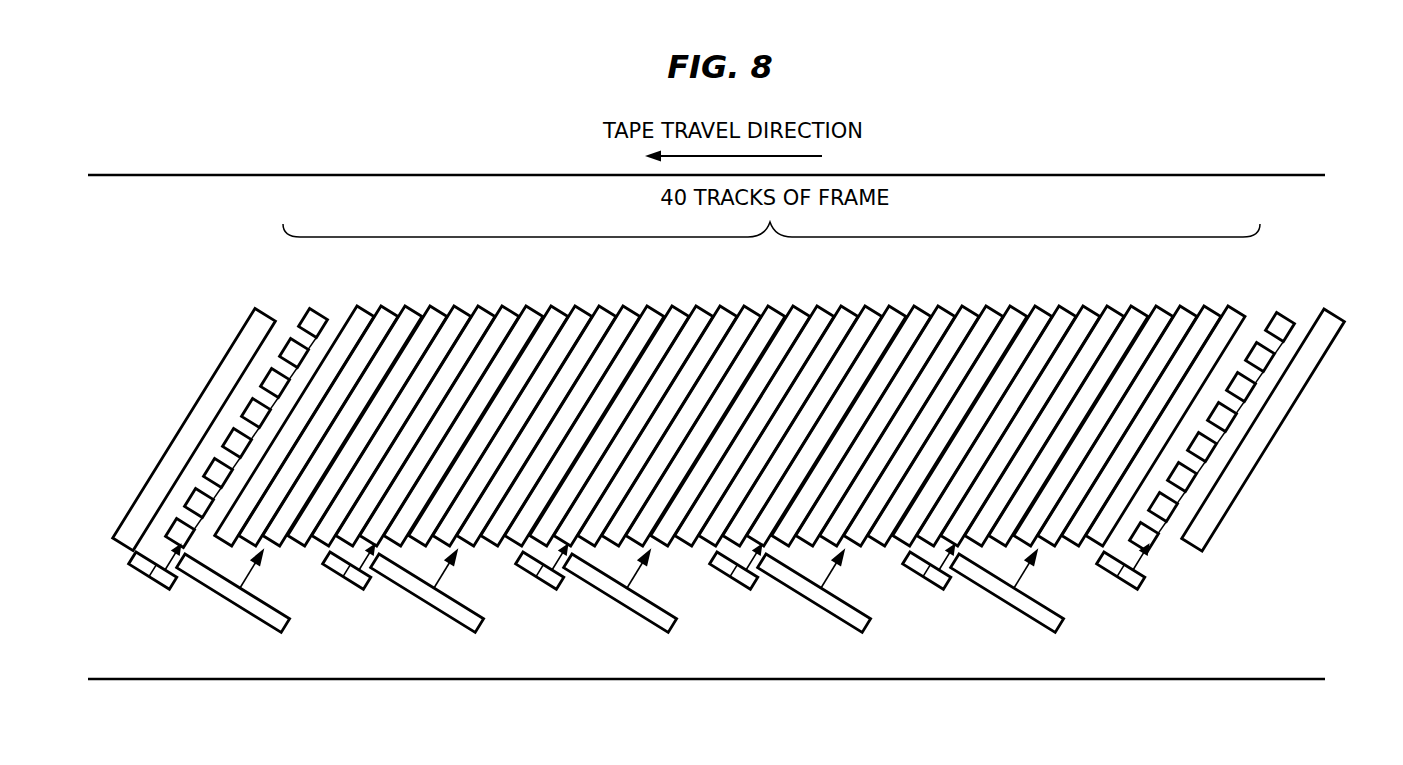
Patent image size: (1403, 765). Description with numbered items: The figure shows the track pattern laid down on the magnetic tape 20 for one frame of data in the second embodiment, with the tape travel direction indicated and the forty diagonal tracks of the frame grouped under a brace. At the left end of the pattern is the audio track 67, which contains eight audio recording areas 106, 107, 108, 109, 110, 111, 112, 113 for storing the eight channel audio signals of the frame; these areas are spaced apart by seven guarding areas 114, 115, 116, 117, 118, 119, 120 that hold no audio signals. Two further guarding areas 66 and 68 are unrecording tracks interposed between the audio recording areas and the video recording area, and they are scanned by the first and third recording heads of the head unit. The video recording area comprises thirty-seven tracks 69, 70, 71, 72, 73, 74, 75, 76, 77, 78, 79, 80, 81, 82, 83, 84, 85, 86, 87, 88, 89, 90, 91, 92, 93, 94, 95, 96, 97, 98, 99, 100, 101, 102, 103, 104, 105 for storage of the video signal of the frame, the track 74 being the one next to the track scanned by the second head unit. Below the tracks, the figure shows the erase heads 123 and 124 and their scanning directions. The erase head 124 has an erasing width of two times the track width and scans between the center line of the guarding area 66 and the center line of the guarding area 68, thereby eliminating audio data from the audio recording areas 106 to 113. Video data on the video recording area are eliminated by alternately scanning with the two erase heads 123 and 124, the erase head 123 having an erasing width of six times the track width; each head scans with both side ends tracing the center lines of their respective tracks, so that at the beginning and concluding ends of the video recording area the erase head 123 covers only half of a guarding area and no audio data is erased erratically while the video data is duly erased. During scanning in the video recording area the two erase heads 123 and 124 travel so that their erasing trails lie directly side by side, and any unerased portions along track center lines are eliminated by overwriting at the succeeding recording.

The magnetic tape 20 is at (1212, 655).
The guarding area 66 is at (279, 298).
The track 67 is at (304, 298).
The guarding area 68 is at (331, 298).
The track 69 is at (301, 393).
The track 70 is at (323, 409).
The track 71 is at (349, 393).
The track 72 is at (372, 409).
The track 73 is at (398, 393).
The track 74 is at (420, 409).
The track 75 is at (446, 393).
The track 76 is at (468, 409).
The track 77 is at (495, 393).
The track 78 is at (517, 409).
The track 79 is at (543, 393).
The track 80 is at (565, 409).
The track 81 is at (591, 393).
The track 82 is at (614, 409).
The track 83 is at (640, 393).
The track 84 is at (662, 409).
The track 85 is at (688, 393).
The track 86 is at (710, 409).
The track 87 is at (737, 393).
The track 88 is at (759, 409).
The track 89 is at (785, 393).
The track 90 is at (807, 409).
The track 91 is at (833, 393).
The track 92 is at (856, 409).
The track 93 is at (882, 393).
The track 94 is at (904, 409).
The track 95 is at (930, 393).
The track 96 is at (952, 409).
The track 97 is at (979, 393).
The track 98 is at (1001, 409).
The track 99 is at (1027, 393).
The track 100 is at (1052, 409).
The track 101 is at (1078, 393).
The track 102 is at (1101, 409).
The track 103 is at (1127, 393).
The track 104 is at (1149, 409).
The track 105 is at (1175, 393).
The audio recording area 106 is at (197, 400).
The audio recording area 107 is at (202, 303).
The audio recording area 108 is at (183, 333).
The audio recording area 109 is at (165, 363).
The audio recording area 110 is at (147, 392).
The audio recording area 111 is at (128, 422).
The audio recording area 112 is at (109, 452).
The audio recording area 113 is at (91, 482).
The guarding area 114 is at (269, 309).
The guarding area 115 is at (251, 339).
The guarding area 116 is at (232, 369).
The guarding area 117 is at (214, 399).
The guarding area 118 is at (195, 429).
The guarding area 119 is at (177, 459).
The guarding area 120 is at (158, 504).
The erase head 123 is at (620, 606).
The erase head 124 is at (638, 589).